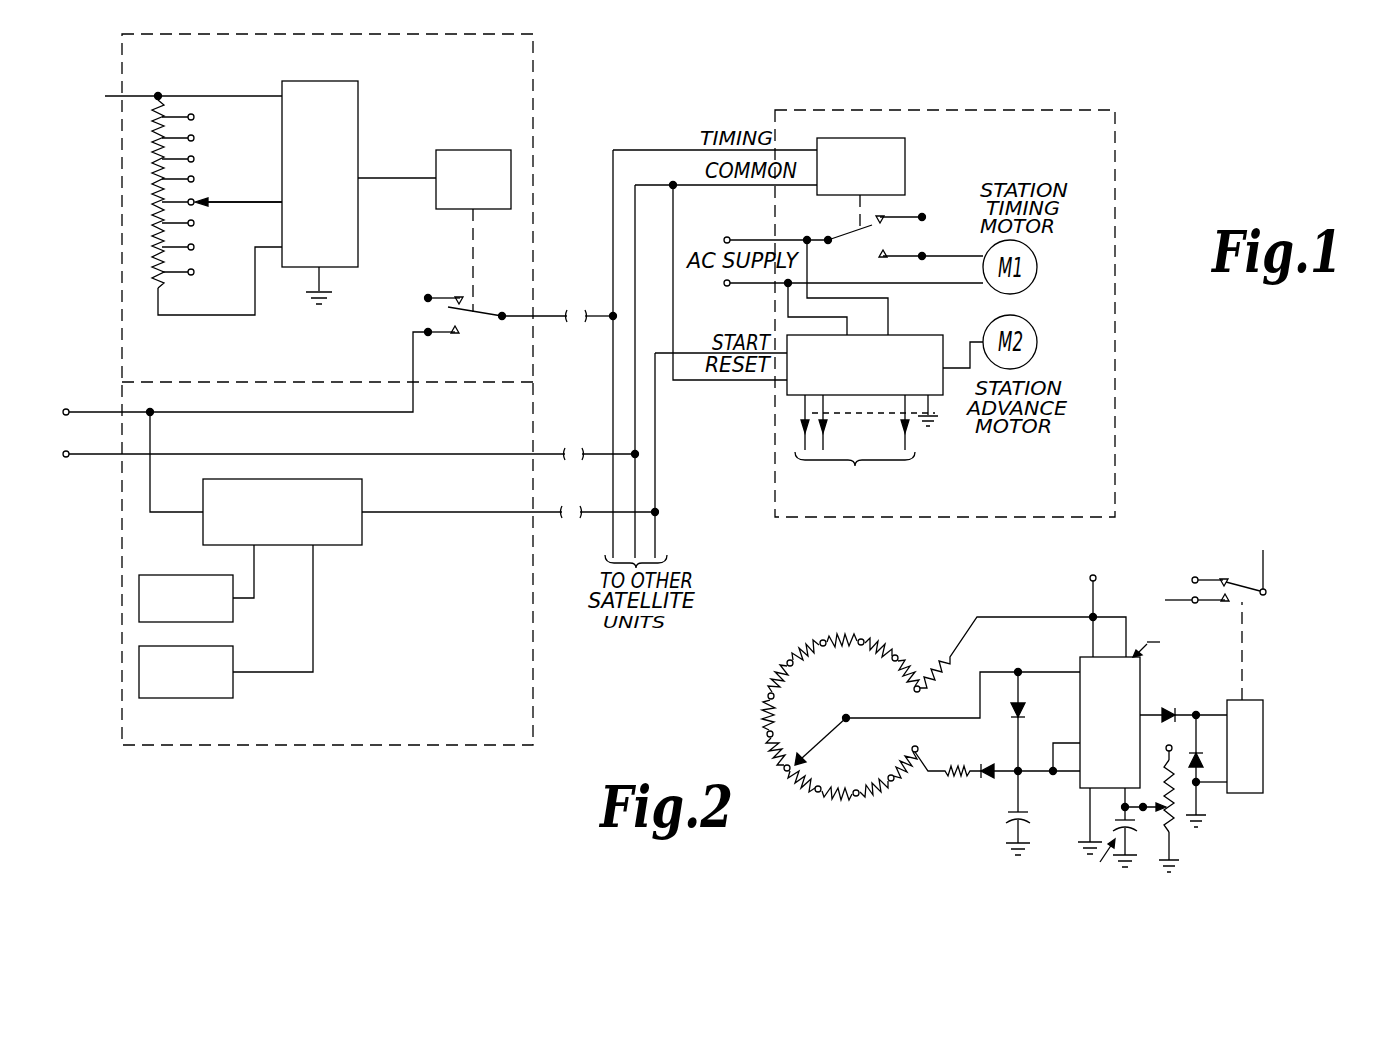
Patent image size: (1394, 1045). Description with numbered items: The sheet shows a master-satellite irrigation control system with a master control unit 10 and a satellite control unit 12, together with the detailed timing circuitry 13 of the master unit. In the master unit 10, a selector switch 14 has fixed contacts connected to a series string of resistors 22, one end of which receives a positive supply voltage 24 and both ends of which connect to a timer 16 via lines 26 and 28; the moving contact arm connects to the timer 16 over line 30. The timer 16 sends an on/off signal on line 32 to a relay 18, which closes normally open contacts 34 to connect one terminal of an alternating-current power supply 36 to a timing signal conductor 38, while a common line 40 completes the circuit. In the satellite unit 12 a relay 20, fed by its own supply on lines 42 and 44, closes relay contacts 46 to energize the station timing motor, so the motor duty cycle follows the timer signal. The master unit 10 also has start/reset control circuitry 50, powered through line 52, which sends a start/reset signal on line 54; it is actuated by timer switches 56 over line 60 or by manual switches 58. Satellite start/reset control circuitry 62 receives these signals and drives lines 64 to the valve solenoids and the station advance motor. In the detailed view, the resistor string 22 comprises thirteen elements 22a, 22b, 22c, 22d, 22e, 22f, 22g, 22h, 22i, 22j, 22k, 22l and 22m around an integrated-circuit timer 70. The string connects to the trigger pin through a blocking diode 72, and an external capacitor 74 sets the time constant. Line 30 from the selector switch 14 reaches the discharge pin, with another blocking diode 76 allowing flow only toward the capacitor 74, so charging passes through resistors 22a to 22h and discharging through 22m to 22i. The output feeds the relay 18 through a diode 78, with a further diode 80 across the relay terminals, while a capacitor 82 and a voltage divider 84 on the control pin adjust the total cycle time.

In FIG. 1, the master control unit 10 is at (327, 374).
In FIG. 1, the satellite control unit 12 is at (945, 294).
In FIG. 1, the timing circuitry 13 is at (546, 88).
In FIG. 1, the selector switch 14 is at (208, 160).
In FIG. 2, the selector switch 14 is at (840, 727).
In FIG. 1, the timer 16 is at (358, 222).
In FIG. 1, the relay 18 is at (450, 150).
In FIG. 2, the relay 18 is at (1263, 703).
In FIG. 1, the relay 20 is at (905, 146).
In FIG. 1, the series string of resistors 22 is at (156, 176).
In FIG. 2, the series string of resistors 22 is at (923, 709).
In FIG. 2, the resistor element 22a is at (952, 662).
In FIG. 2, the resistor element 22b is at (902, 680).
In FIG. 2, the resistor element 22c is at (888, 652).
In FIG. 2, the resistor element 22d is at (828, 621).
In FIG. 2, the resistor element 22e is at (800, 656).
In FIG. 2, the resistor element 22f is at (788, 682).
In FIG. 2, the resistor element 22g is at (774, 712).
In FIG. 2, the resistor element 22h is at (779, 762).
In FIG. 2, the resistor element 22i is at (810, 774).
In FIG. 2, the resistor element 22j is at (832, 802).
In FIG. 2, the resistor element 22k is at (890, 792).
In FIG. 2, the resistor element 22l is at (914, 744).
In FIG. 2, the resistor element 22m is at (997, 754).
In FIG. 1, the positive supply voltage 24 is at (128, 96).
In FIG. 2, the positive supply voltage 24 is at (1098, 608).
In FIG. 1, the line 26 is at (190, 96).
In FIG. 1, the line 28 is at (196, 316).
In FIG. 2, the line 28 is at (984, 782).
In FIG. 1, the line 30 is at (218, 206).
In FIG. 2, the line 30 is at (934, 718).
In FIG. 1, the line 32 is at (378, 172).
In FIG. 1, the normally open contacts 34 is at (470, 328).
In FIG. 2, the normally open contacts 34 is at (1263, 600).
In FIG. 1, the alternating-current power supply 36 is at (86, 412).
In FIG. 2, the alternating-current power supply 36 is at (1178, 602).
In FIG. 1, the timing signal conductor 38 is at (527, 316).
In FIG. 2, the timing signal conductor 38 is at (1274, 560).
In FIG. 1, the common line 40 is at (400, 456).
In FIG. 1, the line 42 is at (764, 240).
In FIG. 1, the line 44 is at (742, 286).
In FIG. 1, the relay contacts 46 is at (880, 260).
In FIG. 1, the start/reset control circuitry 50 is at (336, 547).
In FIG. 1, the line 52 is at (164, 472).
In FIG. 1, the line 54 is at (408, 514).
In FIG. 1, the timer switches 56 is at (233, 610).
In FIG. 1, the manual switches 58 is at (233, 688).
In FIG. 1, the line 60 is at (254, 568).
In FIG. 1, the start/reset control circuitry 62 is at (782, 392).
In FIG. 1, the lines 64 is at (874, 432).
In FIG. 2, the integrated-circuit timer 70 is at (1080, 657).
In FIG. 2, the blocking diode 72 is at (1006, 836).
In FIG. 2, the external capacitor 74 is at (1030, 818).
In FIG. 2, the blocking diode 76 is at (1036, 700).
In FIG. 2, the diode 78 is at (1178, 708).
In FIG. 2, the diode 80 is at (1206, 760).
In FIG. 2, the capacitor 82 is at (1158, 800).
In FIG. 2, the voltage divider 84 is at (1190, 843).